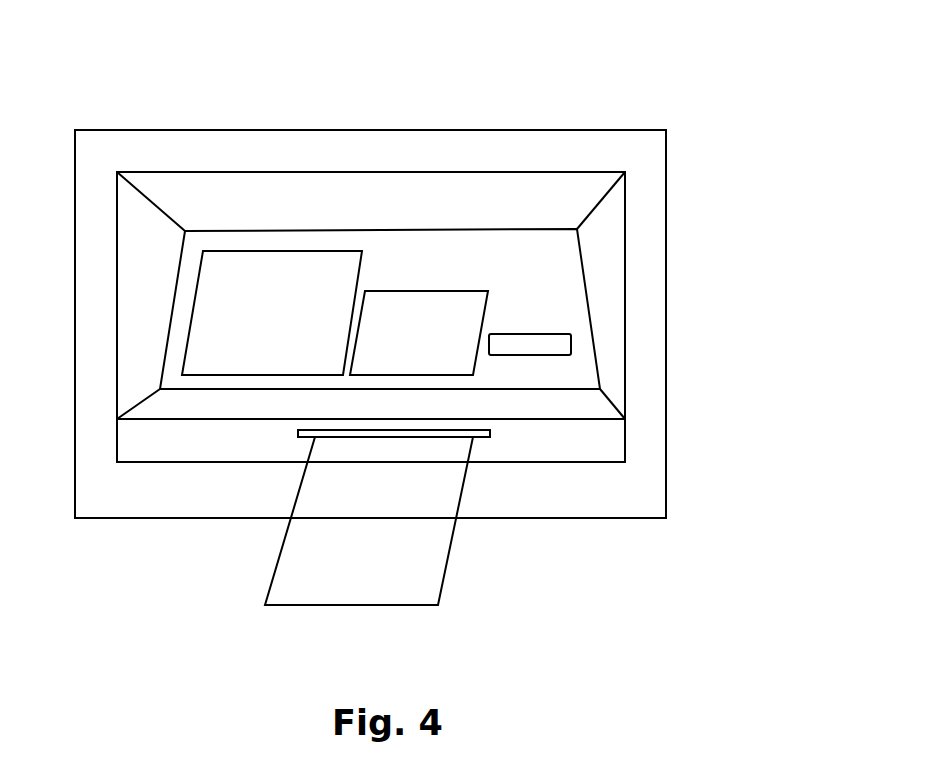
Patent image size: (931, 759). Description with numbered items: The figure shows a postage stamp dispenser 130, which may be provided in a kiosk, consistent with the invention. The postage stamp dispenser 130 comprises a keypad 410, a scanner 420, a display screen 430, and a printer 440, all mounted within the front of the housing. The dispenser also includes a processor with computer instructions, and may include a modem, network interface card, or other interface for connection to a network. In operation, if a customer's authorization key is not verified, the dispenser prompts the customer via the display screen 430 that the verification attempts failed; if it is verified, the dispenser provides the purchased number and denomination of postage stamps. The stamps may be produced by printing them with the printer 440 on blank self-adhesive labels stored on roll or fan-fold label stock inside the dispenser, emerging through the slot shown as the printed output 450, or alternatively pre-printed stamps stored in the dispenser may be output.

The postage stamp dispenser 130 is at (444, 322).
The keypad 410 is at (467, 377).
The scanner 420 is at (530, 356).
The display screen 430 is at (213, 377).
The printer 440 is at (238, 463).
The printed receipt 450 is at (447, 563).